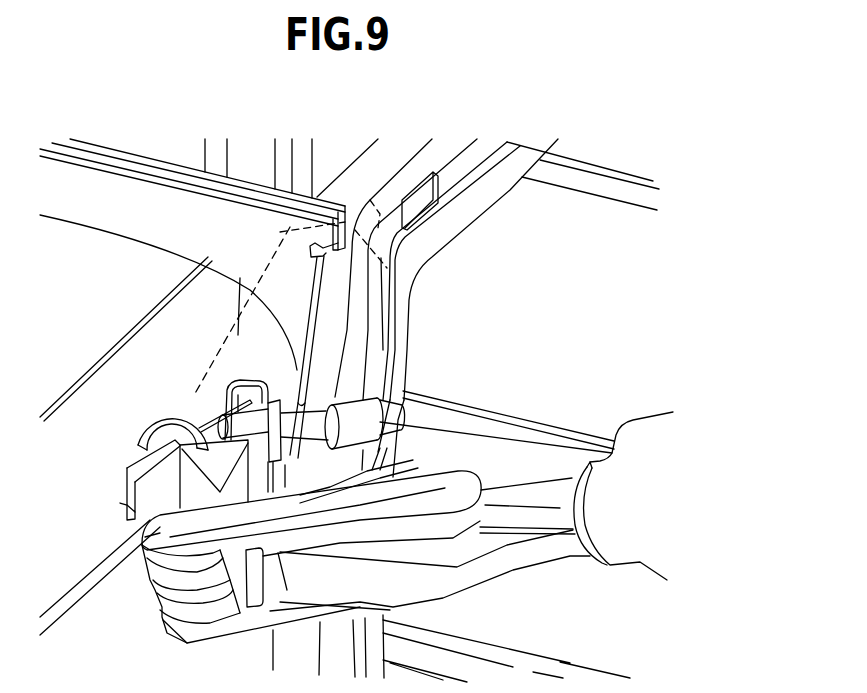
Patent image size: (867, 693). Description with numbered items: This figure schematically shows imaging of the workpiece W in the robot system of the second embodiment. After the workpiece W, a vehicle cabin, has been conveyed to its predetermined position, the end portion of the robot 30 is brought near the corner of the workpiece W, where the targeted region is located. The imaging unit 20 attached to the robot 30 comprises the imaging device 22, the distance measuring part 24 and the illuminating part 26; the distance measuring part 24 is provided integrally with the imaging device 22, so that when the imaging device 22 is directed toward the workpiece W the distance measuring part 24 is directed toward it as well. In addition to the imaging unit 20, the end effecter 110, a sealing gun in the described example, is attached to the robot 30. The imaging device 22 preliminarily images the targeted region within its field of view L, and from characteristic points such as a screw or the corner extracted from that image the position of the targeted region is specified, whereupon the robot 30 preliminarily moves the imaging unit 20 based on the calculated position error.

The workpiece W is at (362, 155).
The field of view L is at (235, 330).
The imaging unit 20 is at (88, 511).
The imaging device 22 is at (127, 481).
The distance measuring part 24 is at (127, 513).
The illuminating part 26 is at (170, 408).
The end effecter 110 is at (400, 417).
The robot 30 is at (646, 433).